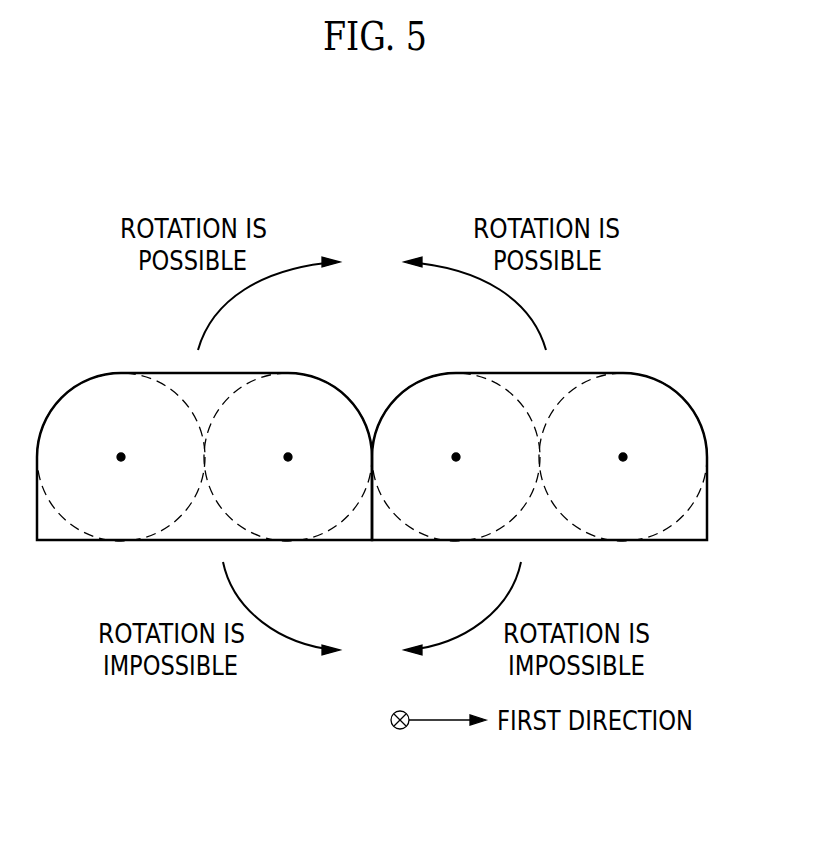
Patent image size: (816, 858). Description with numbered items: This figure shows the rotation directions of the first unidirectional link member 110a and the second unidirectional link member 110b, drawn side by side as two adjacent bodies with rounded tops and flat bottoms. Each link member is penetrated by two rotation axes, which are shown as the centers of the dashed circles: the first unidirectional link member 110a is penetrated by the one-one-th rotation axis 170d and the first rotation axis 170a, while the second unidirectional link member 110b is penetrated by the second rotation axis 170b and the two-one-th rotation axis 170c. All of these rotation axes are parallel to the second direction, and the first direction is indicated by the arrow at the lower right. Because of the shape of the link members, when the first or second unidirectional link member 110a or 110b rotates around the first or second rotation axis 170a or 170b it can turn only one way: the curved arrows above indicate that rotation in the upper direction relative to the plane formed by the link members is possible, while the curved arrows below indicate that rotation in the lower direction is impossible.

The first unidirectional link member 110a is at (185, 530).
The second unidirectional link member 110b is at (547, 530).
The first rotation axis 170a is at (288, 458).
The second rotation axis 170b is at (456, 458).
The 2-1-th rotation axis 170c is at (623, 458).
The 1-1-th rotation axis 170d is at (121, 458).